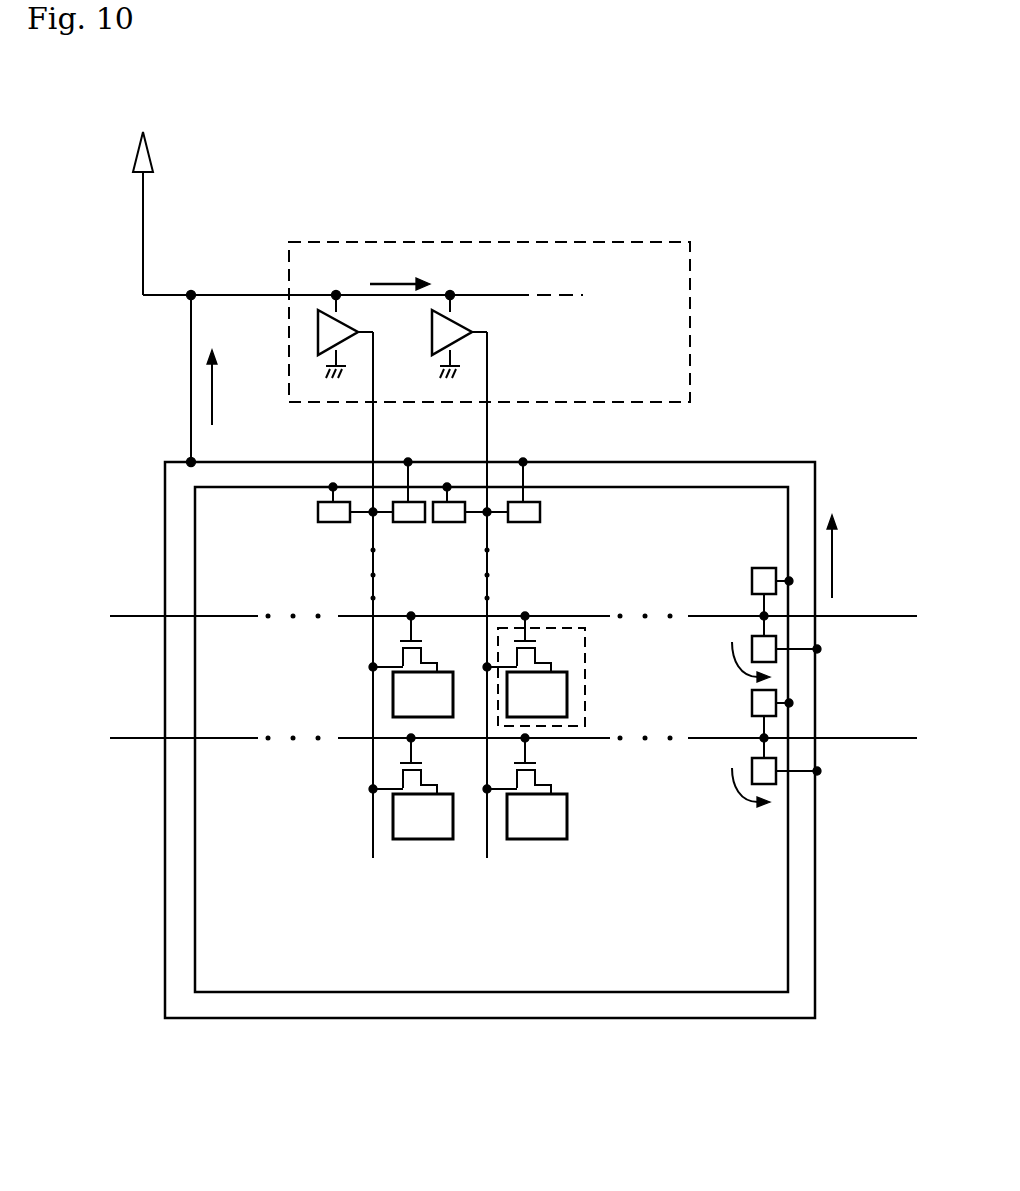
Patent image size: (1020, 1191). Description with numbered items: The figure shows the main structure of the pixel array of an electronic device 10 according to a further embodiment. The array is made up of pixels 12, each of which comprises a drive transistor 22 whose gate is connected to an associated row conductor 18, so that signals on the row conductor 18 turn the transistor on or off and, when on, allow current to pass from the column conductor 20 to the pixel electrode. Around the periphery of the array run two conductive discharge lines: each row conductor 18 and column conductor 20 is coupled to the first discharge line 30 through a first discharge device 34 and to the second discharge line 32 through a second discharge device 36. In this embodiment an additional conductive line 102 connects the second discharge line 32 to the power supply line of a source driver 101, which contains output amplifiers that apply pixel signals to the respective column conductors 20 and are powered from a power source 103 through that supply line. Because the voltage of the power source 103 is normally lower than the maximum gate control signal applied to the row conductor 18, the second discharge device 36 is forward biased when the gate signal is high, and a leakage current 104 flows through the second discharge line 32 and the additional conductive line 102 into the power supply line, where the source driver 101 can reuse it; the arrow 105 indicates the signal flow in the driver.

The electronic device 10 is at (735, 435).
The pixel 12 is at (569, 628).
The row conductor 18 is at (118, 614).
The column conductor 20 is at (375, 430).
The drive transistor 22 is at (550, 648).
The first discharge line 30 is at (788, 825).
The second discharge line 32 is at (817, 873).
The first discharge device 34 is at (322, 522).
The second discharge device 36 is at (405, 522).
The source driver 101 is at (690, 320).
The additional conductive line 102 is at (191, 343).
The power source 103 is at (141, 200).
The leakage current 104 is at (212, 412).
The signal flow direction 105 is at (398, 278).